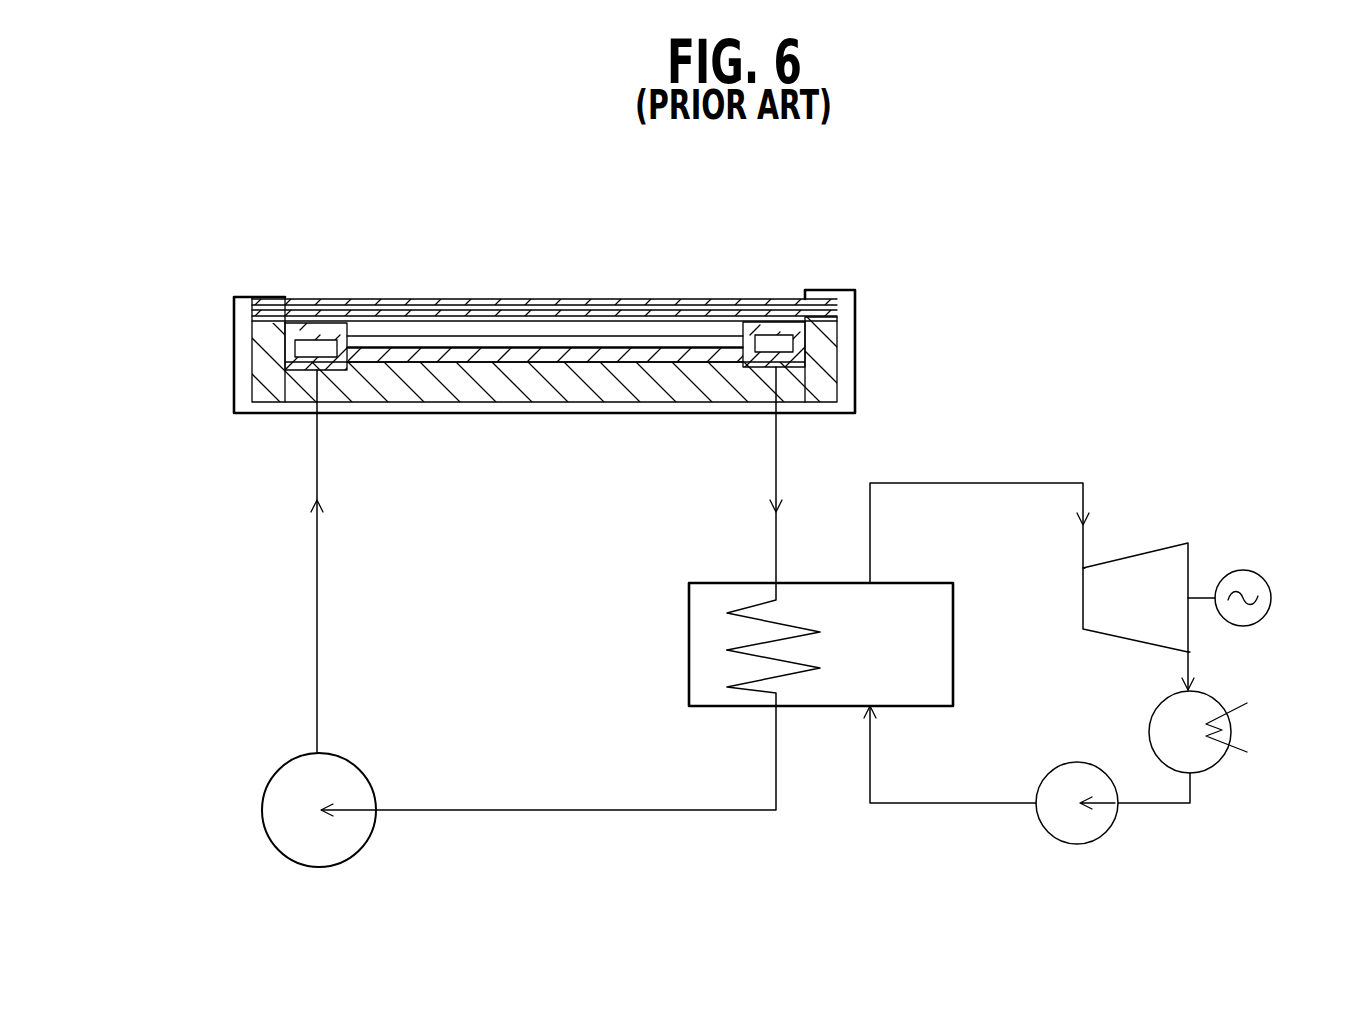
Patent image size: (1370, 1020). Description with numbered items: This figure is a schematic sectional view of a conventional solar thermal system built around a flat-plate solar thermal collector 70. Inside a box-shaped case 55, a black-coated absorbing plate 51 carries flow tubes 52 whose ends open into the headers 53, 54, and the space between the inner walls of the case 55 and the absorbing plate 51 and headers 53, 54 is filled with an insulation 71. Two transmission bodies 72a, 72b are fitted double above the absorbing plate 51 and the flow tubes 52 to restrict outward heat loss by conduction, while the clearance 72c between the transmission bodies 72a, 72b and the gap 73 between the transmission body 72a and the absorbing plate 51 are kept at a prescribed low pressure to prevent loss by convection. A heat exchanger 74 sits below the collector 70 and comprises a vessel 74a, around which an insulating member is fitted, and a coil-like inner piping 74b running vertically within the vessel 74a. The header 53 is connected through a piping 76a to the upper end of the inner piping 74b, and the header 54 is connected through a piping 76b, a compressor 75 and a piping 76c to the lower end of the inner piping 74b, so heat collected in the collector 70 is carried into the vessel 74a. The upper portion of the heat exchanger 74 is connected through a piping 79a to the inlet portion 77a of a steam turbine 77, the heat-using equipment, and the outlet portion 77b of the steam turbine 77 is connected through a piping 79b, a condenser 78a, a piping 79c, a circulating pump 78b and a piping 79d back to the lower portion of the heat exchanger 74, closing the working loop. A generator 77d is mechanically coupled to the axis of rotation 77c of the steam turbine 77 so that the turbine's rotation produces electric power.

The flat-plate solar thermal collector 70 is at (618, 200).
The case 55 is at (866, 298).
The insulation 71 is at (506, 396).
The transmission body 72a is at (404, 317).
The transmission body 72b is at (456, 300).
The clearance 72c is at (352, 303).
The absorbing plate 51 is at (551, 333).
The flow tubes 52 is at (601, 335).
The header 53 is at (775, 328).
The header 54 is at (310, 322).
The gap 73 is at (659, 332).
The heat exchanger 74 is at (612, 688).
The vessel 74a is at (688, 611).
The inner piping 74b is at (751, 655).
The compressor 75 is at (283, 852).
The piping 76a is at (772, 462).
The piping 76b is at (572, 812).
The piping 76c is at (316, 556).
The steam turbine 77 is at (1148, 528).
The inlet portion 77a is at (1083, 568).
The outlet portion 77b is at (1190, 652).
The axis of rotation 77c is at (1205, 598).
The generator 77d is at (1271, 582).
The condenser 78a is at (1153, 705).
The circulating pump 78b is at (1048, 833).
The piping 79a is at (983, 481).
The piping 79b is at (1192, 668).
The piping 79c is at (1160, 808).
The piping 79d is at (898, 808).